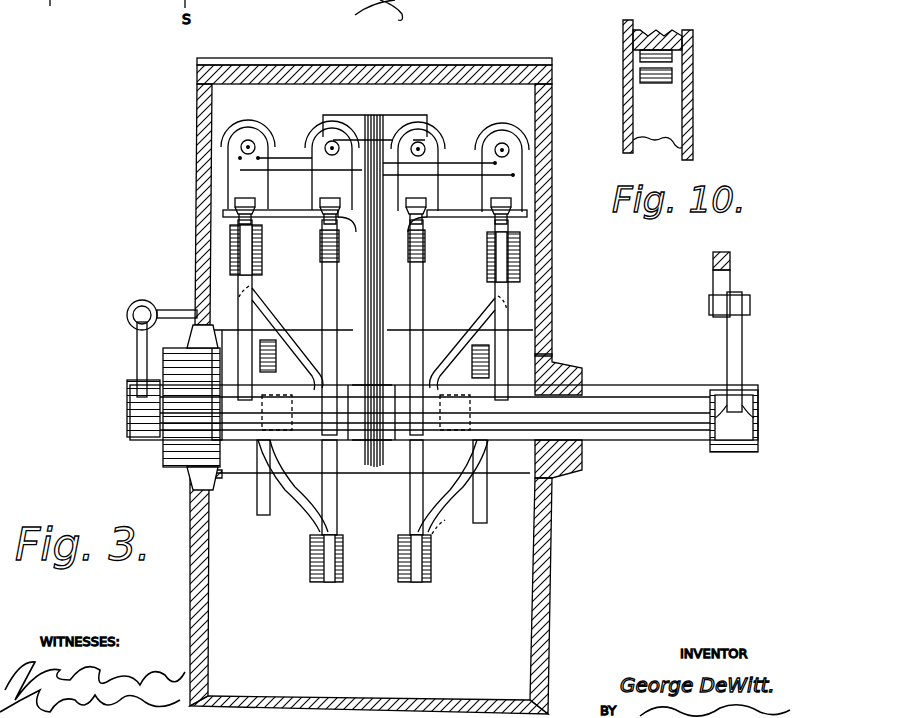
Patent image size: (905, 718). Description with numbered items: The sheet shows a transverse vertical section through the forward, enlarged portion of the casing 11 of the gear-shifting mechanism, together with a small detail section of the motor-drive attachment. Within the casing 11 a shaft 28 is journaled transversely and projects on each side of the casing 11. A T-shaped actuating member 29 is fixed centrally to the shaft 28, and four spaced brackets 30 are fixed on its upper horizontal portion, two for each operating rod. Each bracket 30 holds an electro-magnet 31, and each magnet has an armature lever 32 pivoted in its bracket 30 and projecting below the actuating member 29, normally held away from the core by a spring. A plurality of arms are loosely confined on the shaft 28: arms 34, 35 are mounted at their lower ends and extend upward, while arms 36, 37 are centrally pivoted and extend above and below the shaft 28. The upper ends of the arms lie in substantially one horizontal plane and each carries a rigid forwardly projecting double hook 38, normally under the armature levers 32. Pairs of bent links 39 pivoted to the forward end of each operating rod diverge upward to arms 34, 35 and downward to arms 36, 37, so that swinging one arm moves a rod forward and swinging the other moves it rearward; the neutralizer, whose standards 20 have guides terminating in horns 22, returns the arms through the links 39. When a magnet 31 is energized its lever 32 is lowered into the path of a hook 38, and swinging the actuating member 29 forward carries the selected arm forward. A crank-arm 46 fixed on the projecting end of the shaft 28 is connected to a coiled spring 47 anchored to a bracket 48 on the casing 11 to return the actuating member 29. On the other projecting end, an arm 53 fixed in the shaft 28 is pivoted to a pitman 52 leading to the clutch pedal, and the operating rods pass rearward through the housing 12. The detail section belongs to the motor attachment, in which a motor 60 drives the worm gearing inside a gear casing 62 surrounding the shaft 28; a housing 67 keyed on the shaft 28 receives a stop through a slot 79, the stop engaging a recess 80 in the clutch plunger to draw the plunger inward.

In FIG. 3, the casing 11 is at (318, 66).
In FIG. 3, the housing 12 is at (386, 522).
In FIG. 3, the standards 20 is at (255, 490).
In FIG. 3, the horns 22 is at (489, 358).
In FIG. 3, the shaft 28 is at (636, 406).
In FIG. 3, the T-shaped actuating member 29 is at (288, 214).
In FIG. 3, the brackets 30 is at (486, 192).
In FIG. 3, the electro-magnet 31 is at (482, 134).
In FIG. 3, the armature lever 32 is at (238, 233).
In FIG. 3, the arm 34 is at (246, 318).
In FIG. 3, the arm 35 is at (497, 290).
In FIG. 3, the arm 36 is at (323, 274).
In FIG. 3, the arm 37 is at (418, 296).
In FIG. 3, the double hook 38 is at (323, 240).
In FIG. 3, the links 39 is at (281, 308).
In FIG. 3, the crank-arm 46 is at (135, 357).
In FIG. 3, the coiled spring 47 is at (128, 316).
In FIG. 3, the bracket 48 is at (175, 310).
In FIG. 3, the pitman 52 is at (727, 280).
In FIG. 3, the arm 53 is at (742, 347).
In FIG. 3, the motor 60 is at (54, 17).
In FIG. 10, the gear casing 62 is at (622, 60).
In FIG. 10, the housing 67 is at (664, 126).
In FIG. 10, the slot 79 is at (660, 88).
In FIG. 10, the recess 80 is at (672, 76).